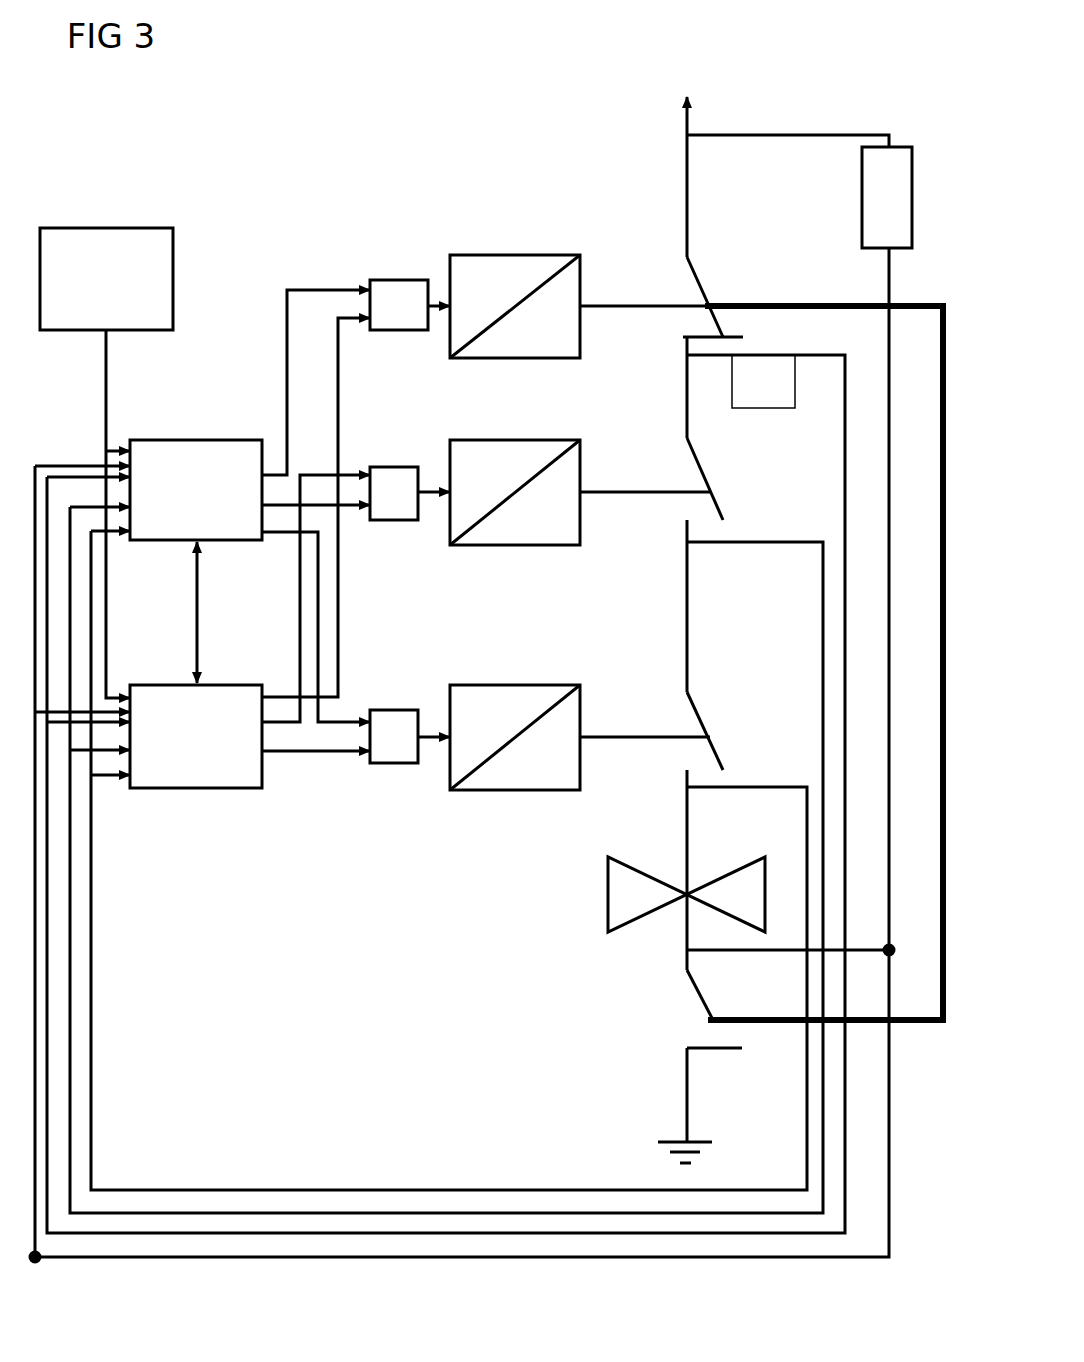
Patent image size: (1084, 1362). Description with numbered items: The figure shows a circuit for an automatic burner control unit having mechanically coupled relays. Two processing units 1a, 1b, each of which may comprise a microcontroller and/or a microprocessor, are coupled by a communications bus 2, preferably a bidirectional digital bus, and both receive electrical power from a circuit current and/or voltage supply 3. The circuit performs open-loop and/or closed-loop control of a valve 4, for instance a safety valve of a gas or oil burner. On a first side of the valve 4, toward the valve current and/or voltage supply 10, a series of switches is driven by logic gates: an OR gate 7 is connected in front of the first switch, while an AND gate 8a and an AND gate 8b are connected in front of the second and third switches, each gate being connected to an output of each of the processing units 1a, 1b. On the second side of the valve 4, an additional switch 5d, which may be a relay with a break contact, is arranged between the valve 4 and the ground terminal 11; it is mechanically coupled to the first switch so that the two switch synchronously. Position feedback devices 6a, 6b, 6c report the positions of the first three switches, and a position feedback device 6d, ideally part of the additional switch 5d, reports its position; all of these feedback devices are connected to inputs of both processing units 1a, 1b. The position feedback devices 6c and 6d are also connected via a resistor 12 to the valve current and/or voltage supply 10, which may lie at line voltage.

The processing unit 1a is at (250, 506).
The processing unit 1b is at (250, 553).
The communications bus 2 is at (210, 612).
The circuit current and/or voltage supply 3 is at (106, 463).
The valve 4 is at (686, 913).
The additional switch 5d is at (684, 1009).
The position feedback device 6a is at (739, 347).
The position feedback device 6b is at (731, 565).
The position feedback device 6c is at (731, 774).
The position feedback device 6d is at (790, 974).
The OR gate 7 is at (410, 286).
The AND gate 8a is at (410, 474).
The AND gate 8b is at (410, 717).
The valve current and/or voltage supply 10 is at (759, 171).
The ground terminal 11 is at (659, 1107).
The resistor 12 is at (887, 197).